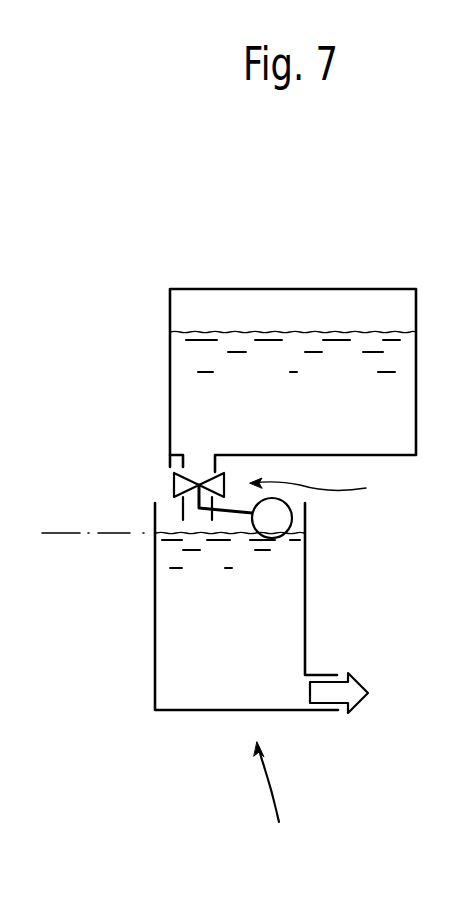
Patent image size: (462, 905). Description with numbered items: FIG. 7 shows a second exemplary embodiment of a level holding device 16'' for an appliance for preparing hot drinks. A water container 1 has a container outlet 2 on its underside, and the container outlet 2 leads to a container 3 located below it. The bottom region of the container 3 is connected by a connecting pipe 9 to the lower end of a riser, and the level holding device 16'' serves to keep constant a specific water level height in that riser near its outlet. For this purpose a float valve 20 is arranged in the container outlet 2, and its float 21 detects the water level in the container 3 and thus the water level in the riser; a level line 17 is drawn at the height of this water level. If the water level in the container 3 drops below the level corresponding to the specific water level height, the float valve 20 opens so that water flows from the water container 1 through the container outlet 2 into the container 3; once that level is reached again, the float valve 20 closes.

The water container 1 is at (344, 325).
The container outlet 2 is at (192, 465).
The container 3 is at (173, 633).
The connecting pipe 9 is at (325, 672).
The level holding device 16'' is at (283, 800).
The liquid level line 17 is at (55, 533).
The float valve 20 is at (324, 480).
The float 21 is at (283, 518).